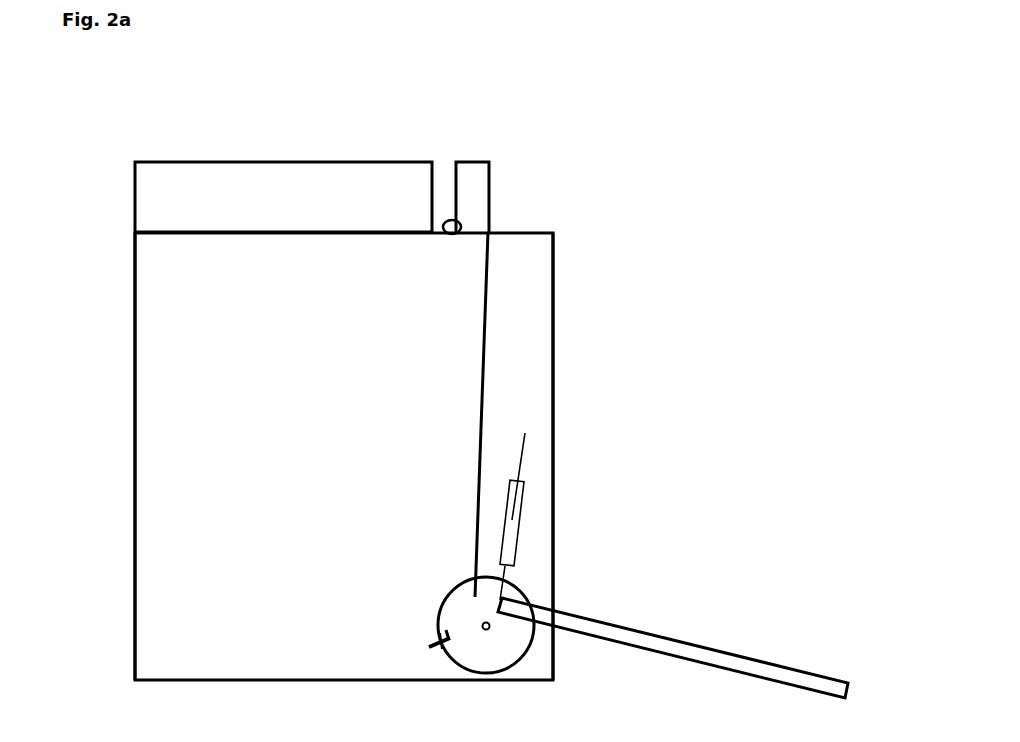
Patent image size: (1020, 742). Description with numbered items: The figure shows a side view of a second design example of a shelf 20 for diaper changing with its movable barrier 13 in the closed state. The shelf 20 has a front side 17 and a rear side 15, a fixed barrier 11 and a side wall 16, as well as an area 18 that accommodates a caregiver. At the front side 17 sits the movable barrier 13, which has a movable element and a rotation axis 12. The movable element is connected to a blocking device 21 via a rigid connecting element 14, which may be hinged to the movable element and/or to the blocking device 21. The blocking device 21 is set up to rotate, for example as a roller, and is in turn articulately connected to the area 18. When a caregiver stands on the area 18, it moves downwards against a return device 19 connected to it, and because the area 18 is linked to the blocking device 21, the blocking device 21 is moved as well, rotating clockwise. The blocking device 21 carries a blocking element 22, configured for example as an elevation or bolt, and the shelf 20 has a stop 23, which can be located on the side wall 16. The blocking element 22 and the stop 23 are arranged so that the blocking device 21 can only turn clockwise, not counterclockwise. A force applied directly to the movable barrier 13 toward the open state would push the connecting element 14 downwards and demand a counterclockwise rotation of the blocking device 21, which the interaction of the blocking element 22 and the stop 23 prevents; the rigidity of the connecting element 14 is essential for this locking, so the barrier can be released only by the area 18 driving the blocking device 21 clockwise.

The fixed barrier 11 is at (193, 161).
The rotation axis 12 is at (449, 219).
The movable barrier 13 is at (490, 178).
The connecting element 14 is at (487, 295).
The rear side 15 is at (118, 472).
The side wall 16 is at (134, 380).
The front side 17 is at (589, 440).
The area 18 is at (675, 640).
The return device 19 is at (535, 451).
The shelf 20 is at (100, 224).
The blocking device 21 is at (455, 583).
The blocking element 22 is at (433, 620).
The stop 23 is at (412, 645).